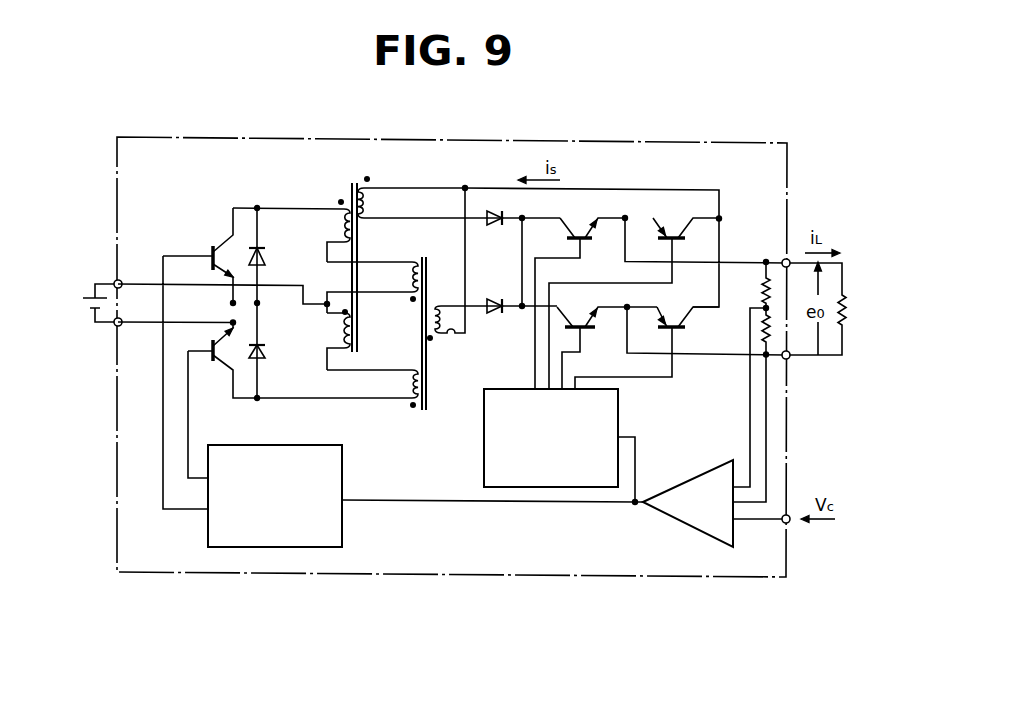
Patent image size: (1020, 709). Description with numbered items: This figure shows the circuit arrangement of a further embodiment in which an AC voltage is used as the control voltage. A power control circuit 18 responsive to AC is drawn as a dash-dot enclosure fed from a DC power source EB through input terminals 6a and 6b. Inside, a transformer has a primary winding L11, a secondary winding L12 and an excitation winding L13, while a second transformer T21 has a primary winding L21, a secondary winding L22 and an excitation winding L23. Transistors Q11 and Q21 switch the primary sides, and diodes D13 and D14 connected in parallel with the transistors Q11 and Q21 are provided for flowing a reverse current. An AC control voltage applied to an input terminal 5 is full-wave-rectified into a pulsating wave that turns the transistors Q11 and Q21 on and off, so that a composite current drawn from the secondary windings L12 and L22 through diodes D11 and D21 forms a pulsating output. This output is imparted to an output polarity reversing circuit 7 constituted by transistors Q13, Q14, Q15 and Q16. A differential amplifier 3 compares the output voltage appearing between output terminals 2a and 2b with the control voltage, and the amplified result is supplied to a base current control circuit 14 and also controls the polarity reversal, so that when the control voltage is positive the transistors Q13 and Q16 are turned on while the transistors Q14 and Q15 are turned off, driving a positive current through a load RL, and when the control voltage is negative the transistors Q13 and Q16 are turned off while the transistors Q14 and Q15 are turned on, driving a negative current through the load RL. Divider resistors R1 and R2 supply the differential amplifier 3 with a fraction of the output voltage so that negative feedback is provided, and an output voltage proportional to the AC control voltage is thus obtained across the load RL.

The power control circuit 18 is at (686, 143).
The input terminal 6a is at (115, 281).
The input terminal 6b is at (115, 326).
The output terminal 2a is at (783, 259).
The output terminal 2b is at (788, 359).
The input terminal 5 is at (788, 523).
The differential amplifier 3 is at (688, 481).
The output polarity reversing circuit 7 is at (510, 389).
The base current control circuit 14 is at (283, 445).
The DC power source EB is at (85, 303).
The transistor Q21 is at (213, 255).
The transistor Q11 is at (224, 360).
The diode D14 is at (274, 255).
The diode D13 is at (274, 350).
The second transformer T21 is at (358, 254).
The primary winding L21 is at (291, 235).
The secondary winding L22 is at (422, 203).
The excitation winding L23 is at (326, 341).
The excitation winding L13 is at (372, 287).
The primary winding L11 is at (337, 384).
The secondary winding L12 is at (460, 275).
The diode D21 is at (523, 210).
The diode D11 is at (522, 320).
The transistor Q13 is at (580, 293).
The transistor Q14 is at (634, 293).
The transistor Q15 is at (607, 338).
The transistor Q16 is at (647, 338).
The divider resistor R1 is at (748, 285).
The divider resistor R2 is at (758, 329).
The load RL is at (828, 309).